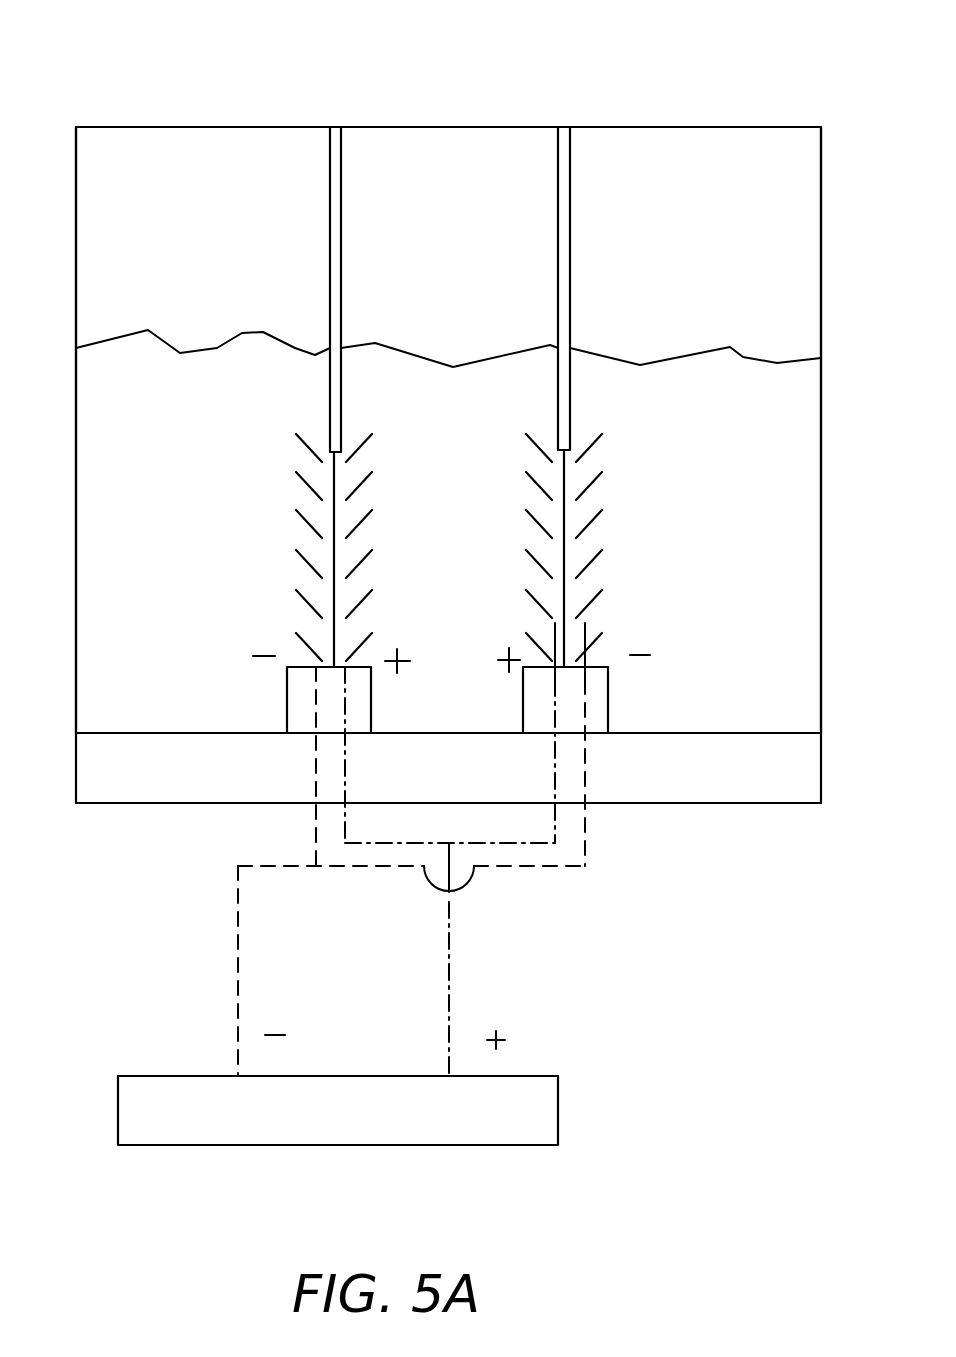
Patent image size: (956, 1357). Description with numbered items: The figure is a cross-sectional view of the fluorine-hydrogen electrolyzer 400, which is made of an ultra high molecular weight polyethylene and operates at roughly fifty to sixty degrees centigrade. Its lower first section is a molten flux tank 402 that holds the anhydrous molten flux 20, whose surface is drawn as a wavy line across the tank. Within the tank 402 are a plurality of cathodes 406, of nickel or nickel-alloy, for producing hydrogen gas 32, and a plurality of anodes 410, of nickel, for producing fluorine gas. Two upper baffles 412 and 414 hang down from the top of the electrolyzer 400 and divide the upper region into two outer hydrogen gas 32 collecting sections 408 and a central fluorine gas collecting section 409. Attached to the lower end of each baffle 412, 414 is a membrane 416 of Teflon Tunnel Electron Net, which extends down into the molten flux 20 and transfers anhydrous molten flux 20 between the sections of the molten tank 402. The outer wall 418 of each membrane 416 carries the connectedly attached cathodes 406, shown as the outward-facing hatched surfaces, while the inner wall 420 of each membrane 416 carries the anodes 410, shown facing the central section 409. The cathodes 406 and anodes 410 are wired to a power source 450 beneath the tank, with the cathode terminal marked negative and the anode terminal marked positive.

The electrolyzer 400 is at (110, 848).
The molten flux tank 402 is at (90, 618).
The cathode 406 is at (287, 522).
The hydrogen gas collecting section 408 is at (164, 181).
The fluorine gas collecting section 409 is at (512, 176).
The anode 410 is at (386, 517).
The upper baffle 412 is at (315, 311).
The upper baffle 414 is at (596, 323).
The membrane 416 is at (345, 442).
The outer wall 418 is at (316, 596).
The inner wall 420 is at (542, 553).
The power source 450 is at (212, 1158).
The hydrogen gas 32 is at (423, 249).
The molten flux 20 is at (448, 367).